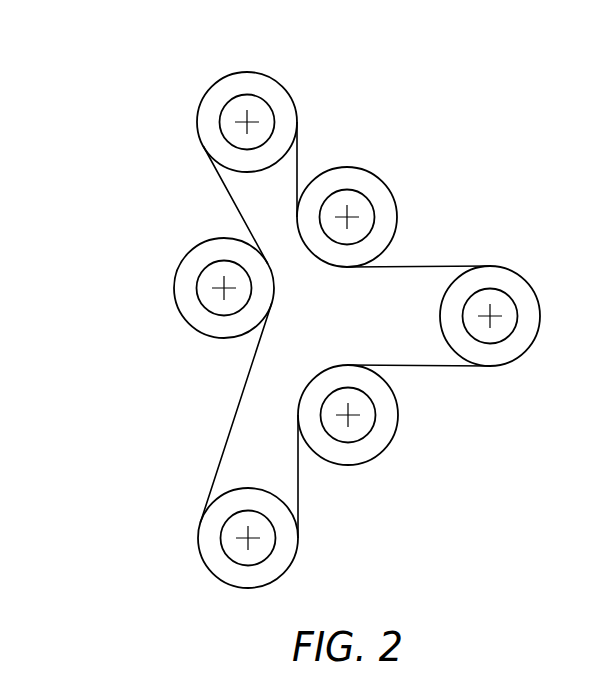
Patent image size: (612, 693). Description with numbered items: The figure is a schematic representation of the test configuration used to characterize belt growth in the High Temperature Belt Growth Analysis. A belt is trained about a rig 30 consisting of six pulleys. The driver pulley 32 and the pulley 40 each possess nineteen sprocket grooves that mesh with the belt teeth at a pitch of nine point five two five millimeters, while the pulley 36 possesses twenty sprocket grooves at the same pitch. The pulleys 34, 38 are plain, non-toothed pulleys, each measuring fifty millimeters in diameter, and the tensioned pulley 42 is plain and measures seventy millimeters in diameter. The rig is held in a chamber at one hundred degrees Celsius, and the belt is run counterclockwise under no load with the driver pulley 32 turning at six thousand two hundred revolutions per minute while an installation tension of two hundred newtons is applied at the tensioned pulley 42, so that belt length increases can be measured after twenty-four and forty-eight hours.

The rig 30 is at (130, 207).
The driver pulley 32 is at (205, 560).
The pulley 34 is at (383, 447).
The pulley 36 is at (505, 270).
The pulley 38 is at (370, 173).
The pulley 40 is at (235, 75).
The tensioned pulley 42 is at (195, 325).